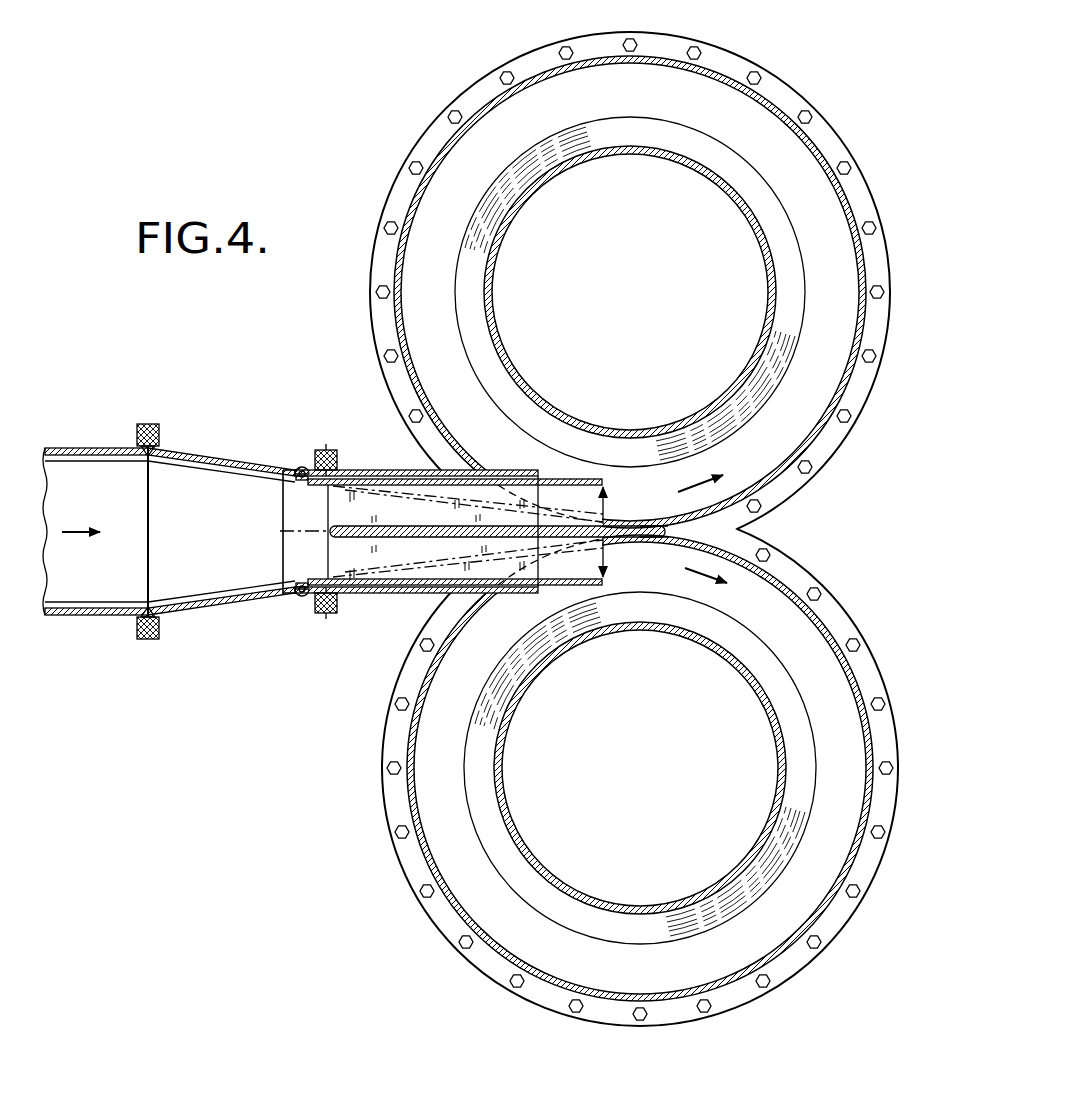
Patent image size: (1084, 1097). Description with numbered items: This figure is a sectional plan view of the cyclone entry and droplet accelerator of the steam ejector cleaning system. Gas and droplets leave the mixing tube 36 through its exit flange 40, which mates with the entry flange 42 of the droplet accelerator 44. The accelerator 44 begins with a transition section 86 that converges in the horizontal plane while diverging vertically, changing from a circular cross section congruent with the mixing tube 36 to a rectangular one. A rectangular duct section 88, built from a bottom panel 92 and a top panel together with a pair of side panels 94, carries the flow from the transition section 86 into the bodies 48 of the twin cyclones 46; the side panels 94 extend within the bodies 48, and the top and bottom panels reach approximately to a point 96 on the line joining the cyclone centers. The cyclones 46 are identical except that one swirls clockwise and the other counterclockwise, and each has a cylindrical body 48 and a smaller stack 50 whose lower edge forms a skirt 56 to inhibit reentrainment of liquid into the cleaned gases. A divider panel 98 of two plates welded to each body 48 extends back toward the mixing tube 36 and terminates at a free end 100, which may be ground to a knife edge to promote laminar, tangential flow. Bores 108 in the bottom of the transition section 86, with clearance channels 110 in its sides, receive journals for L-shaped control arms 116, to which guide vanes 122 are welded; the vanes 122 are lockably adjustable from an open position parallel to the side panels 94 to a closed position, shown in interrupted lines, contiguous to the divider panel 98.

The mixing tube 36 is at (95, 618).
The exit flange 40 is at (147, 428).
The entry flange 42 is at (152, 427).
The droplet accelerator 44 is at (296, 466).
The twin cyclones 46 is at (476, 70).
The cyclone body 48 is at (447, 150).
The cyclone stack 50 is at (491, 259).
The skirt 56 is at (563, 136).
The transition section 86 is at (205, 620).
The rectangular duct section 88 is at (378, 466).
The bottom panel 92 is at (337, 510).
The side panels 94 is at (394, 469).
The point 96 is at (640, 538).
The divider panel 98 is at (497, 548).
The free end 100 is at (300, 532).
The bores 108 is at (297, 479).
The channels 110 is at (312, 450).
The control arms 116 is at (294, 468).
The guide vanes 122 is at (442, 488).